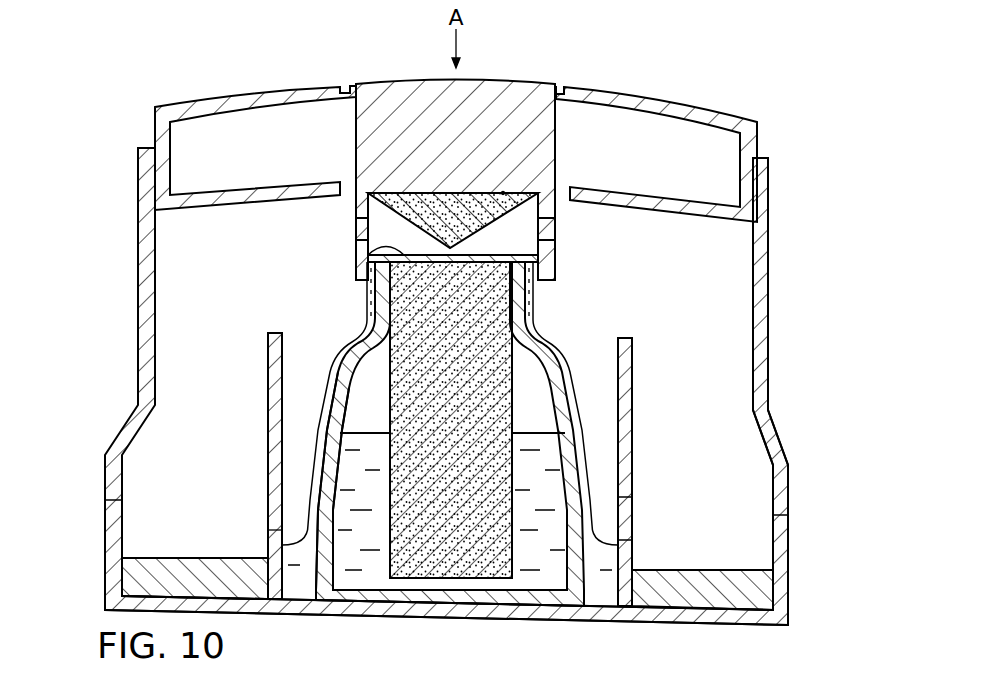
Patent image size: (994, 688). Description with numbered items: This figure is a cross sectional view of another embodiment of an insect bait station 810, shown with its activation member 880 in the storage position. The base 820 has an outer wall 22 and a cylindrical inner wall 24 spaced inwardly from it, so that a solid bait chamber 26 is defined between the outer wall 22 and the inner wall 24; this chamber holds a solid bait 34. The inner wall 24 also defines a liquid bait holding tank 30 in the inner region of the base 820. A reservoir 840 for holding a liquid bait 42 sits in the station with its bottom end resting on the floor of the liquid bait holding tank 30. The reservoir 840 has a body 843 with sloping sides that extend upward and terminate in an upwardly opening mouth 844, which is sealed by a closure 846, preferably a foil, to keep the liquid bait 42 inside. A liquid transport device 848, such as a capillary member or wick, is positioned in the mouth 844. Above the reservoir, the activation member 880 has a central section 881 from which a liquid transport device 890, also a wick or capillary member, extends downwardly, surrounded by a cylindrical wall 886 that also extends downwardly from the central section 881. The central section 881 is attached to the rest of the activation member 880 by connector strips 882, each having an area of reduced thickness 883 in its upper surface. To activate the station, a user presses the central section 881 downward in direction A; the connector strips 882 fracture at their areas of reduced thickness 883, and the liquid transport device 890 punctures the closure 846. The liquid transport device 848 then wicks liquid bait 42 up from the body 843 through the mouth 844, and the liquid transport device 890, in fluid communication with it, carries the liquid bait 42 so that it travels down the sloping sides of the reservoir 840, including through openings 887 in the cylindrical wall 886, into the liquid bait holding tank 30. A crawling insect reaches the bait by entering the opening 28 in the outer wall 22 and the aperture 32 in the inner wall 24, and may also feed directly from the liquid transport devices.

The outer wall 22 is at (782, 492).
The inner wall 24 is at (628, 387).
The solid bait chamber 26 is at (735, 468).
The opening 28 is at (84, 533).
The liquid bait holding tank 30 is at (414, 459).
The aperture 32 is at (628, 518).
The solid bait 34 is at (128, 583).
The liquid bait 42 is at (573, 420).
The insect bait station 810 is at (386, 144).
The base 820 is at (80, 476).
The reservoir 840 is at (342, 590).
The body 843 is at (327, 458).
The mouth 844 is at (380, 300).
The closure 846 is at (362, 248).
The liquid transport device 848 is at (513, 357).
The activation member 880 is at (316, 90).
The central section 881 is at (400, 82).
The connector strips 882 is at (569, 62).
The area of reduced thickness 883 is at (567, 87).
The cylindrical wall 886 is at (556, 212).
The openings 887 is at (556, 233).
The liquid transport device 890 is at (503, 192).